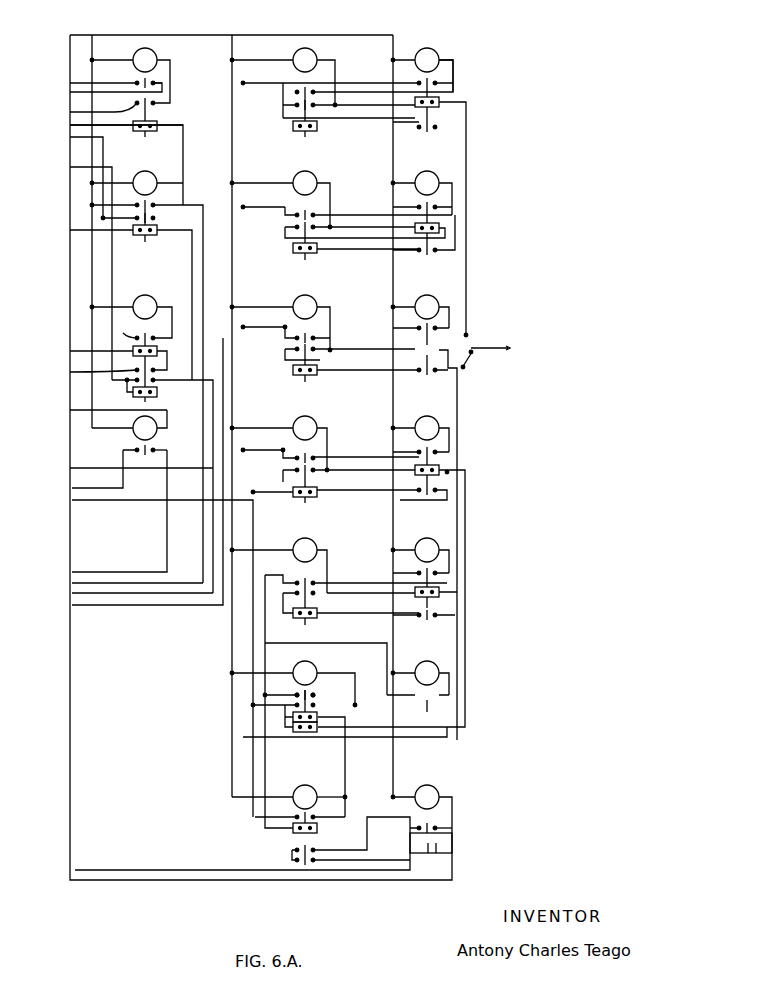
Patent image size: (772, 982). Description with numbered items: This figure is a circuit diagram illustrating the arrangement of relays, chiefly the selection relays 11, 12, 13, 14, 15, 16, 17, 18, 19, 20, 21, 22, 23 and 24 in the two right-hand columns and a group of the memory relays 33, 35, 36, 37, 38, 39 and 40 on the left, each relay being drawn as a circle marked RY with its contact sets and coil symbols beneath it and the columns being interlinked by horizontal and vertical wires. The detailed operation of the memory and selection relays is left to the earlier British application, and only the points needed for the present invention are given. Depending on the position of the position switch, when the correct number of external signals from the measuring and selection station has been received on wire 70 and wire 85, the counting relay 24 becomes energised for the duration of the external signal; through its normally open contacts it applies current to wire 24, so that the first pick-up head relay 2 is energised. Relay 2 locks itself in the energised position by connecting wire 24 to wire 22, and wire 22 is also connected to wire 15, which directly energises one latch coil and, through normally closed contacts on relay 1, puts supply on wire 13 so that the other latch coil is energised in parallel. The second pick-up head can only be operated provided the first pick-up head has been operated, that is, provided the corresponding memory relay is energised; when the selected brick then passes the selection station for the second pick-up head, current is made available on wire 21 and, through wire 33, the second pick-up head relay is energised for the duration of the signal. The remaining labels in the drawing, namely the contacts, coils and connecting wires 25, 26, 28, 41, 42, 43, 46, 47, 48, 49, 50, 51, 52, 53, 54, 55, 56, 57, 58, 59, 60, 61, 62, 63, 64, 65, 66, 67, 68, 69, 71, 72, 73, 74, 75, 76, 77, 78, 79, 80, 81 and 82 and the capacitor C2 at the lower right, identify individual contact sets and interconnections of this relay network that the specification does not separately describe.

The relay RY 1 is at (133, 232).
The relay RY 2 is at (253, 416).
The selection relay RY 11 is at (427, 60).
The selection relay RY 12 is at (305, 60).
The selection relay RY 13 is at (305, 183).
The selection relay RY 14 is at (427, 183).
The selection relay RY 15 is at (305, 307).
The selection relay RY 16 is at (427, 307).
The selection relay RY 17 is at (305, 428).
The selection relay RY 18 is at (427, 428).
The selection relay RY 19 is at (305, 550).
The selection relay RY 20 is at (427, 550).
The selection relay RY 21 is at (427, 673).
The selection relay RY 22 is at (450, 826).
The selection relay RY 23 is at (305, 797).
The counting relay RY 24 is at (405, 829).
The supply line 25 is at (346, 393).
The input line 26 is at (70, 120).
The contact 28 is at (133, 298).
The memory relay RY 33 is at (145, 60).
The memory relay RY 35 is at (128, 276).
The memory relay RY 36 is at (132, 77).
The memory relay RY 37 is at (181, 78).
The memory relay RY 38 is at (133, 351).
The memory relay RY 39 is at (141, 365).
The memory relay RY 40 is at (205, 325).
The contact coil 41 is at (187, 398).
The line 42 is at (168, 427).
The line 43 is at (137, 370).
The line 46 is at (178, 372).
The contact 47 is at (135, 458).
The contact 48 is at (154, 460).
The line 49 is at (153, 381).
The contact 50 is at (181, 118).
The line 51 is at (126, 139).
The coil 52 is at (150, 240).
The line 53 is at (503, 381).
The contact 54 is at (512, 333).
The contact 55 is at (313, 90).
The coil 56 is at (365, 113).
The line 57 is at (350, 258).
The contact 58 is at (484, 193).
The contact 59 is at (470, 323).
The coil 60 is at (366, 252).
The contact 61 is at (272, 350).
The line 62 is at (418, 328).
The contact 63 is at (485, 305).
The coil 64 is at (365, 378).
The contact 65 is at (312, 732).
The line 66 is at (340, 512).
The contact 67 is at (478, 443).
The contact 68 is at (293, 830).
The coil 69 is at (297, 497).
The wire No. 70 is at (450, 488).
The line 71 is at (415, 597).
The contact 72 is at (270, 812).
The contact 73 is at (488, 528).
The contact 74 is at (312, 865).
The coil 75 is at (358, 627).
The contact 76 is at (433, 639).
The line 77 is at (318, 830).
The contact 78 is at (317, 746).
The coil 79 is at (290, 718).
The contact 80 is at (292, 855).
The contact 81 is at (302, 865).
The line 82 is at (320, 853).
The wire No. 85 is at (510, 355).
The capacitor C2 is at (452, 855).